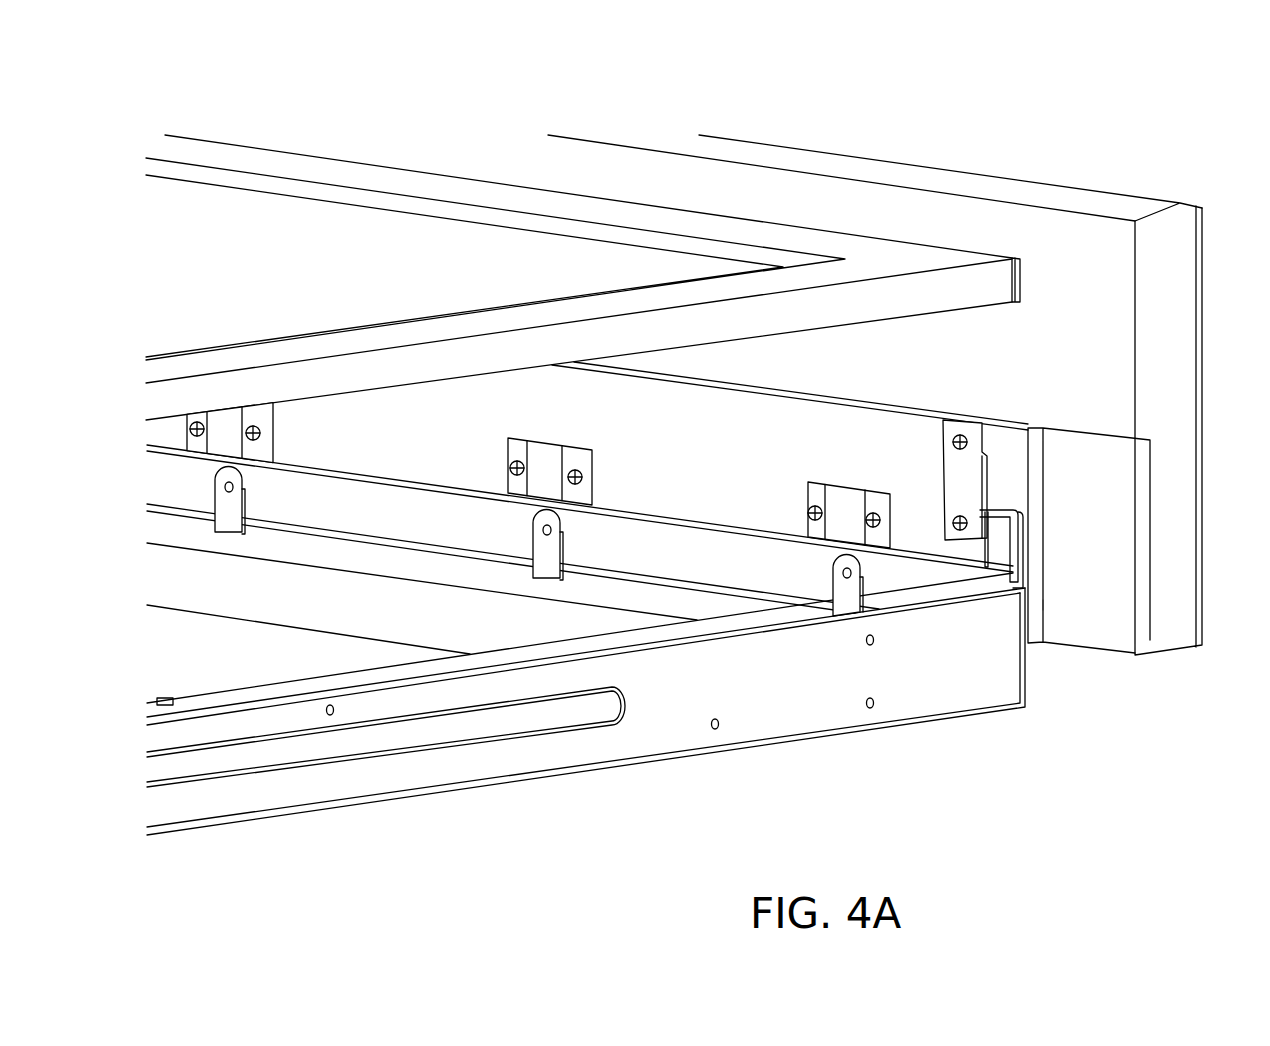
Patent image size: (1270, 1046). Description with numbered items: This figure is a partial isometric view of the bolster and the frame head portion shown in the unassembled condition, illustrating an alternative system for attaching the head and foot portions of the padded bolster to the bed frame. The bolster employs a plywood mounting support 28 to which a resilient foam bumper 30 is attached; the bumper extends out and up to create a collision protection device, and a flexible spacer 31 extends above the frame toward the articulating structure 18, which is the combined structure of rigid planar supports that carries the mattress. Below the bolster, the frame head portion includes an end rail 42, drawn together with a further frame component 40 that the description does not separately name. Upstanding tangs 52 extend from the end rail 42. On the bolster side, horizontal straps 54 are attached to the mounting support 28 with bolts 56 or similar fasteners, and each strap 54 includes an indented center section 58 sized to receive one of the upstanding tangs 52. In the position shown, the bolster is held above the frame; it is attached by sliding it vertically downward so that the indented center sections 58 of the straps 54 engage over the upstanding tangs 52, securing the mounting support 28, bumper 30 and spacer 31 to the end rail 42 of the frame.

The articulating structure 18 is at (895, 255).
The mounting support 28 is at (1043, 598).
The resilient foam bumper 30 is at (1170, 620).
The flexible spacer 31 is at (1150, 262).
The front rail 40 is at (793, 688).
The end rail 42 is at (347, 607).
The upstanding tangs 52 is at (235, 508).
The horizontal straps 54 is at (275, 432).
The bolts 56 is at (800, 498).
The indented center section 58 is at (842, 502).